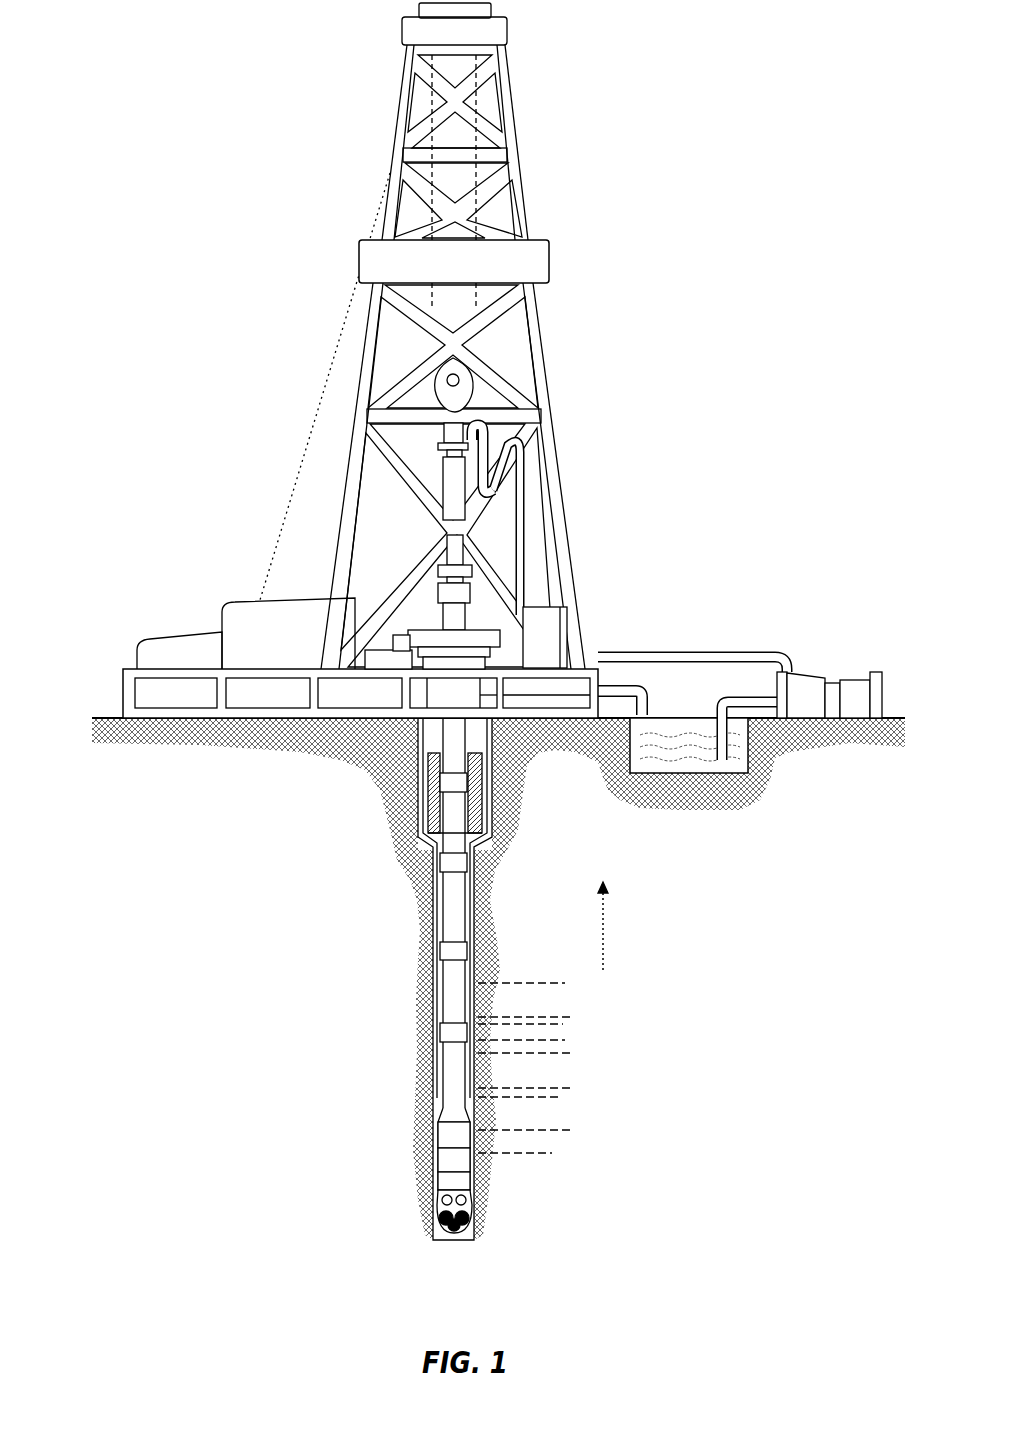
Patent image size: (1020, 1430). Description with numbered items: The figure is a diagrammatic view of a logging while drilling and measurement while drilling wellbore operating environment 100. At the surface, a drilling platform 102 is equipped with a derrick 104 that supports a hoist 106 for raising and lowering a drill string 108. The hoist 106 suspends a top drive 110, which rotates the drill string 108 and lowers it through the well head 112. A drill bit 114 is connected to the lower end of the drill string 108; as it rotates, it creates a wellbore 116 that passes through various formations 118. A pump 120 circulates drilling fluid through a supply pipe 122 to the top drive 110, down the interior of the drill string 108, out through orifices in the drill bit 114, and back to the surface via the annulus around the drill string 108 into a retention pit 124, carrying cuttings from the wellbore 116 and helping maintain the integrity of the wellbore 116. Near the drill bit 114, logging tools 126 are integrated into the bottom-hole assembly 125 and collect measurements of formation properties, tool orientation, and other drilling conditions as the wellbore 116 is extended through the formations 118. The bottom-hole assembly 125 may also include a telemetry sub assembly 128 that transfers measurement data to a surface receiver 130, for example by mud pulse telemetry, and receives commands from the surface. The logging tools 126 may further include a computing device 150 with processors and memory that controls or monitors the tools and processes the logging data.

The wellbore operating environment 100 is at (160, 76).
The drilling platform 102 is at (122, 695).
The derrick 104 is at (522, 170).
The hoist 106 is at (475, 387).
The drill string 108 is at (463, 902).
The top drive 110 is at (452, 478).
The well head 112 is at (497, 627).
The drill bit 114 is at (467, 1193).
The wellbore 116 is at (475, 912).
The formations 118 is at (578, 983).
The pump 120 is at (807, 672).
The supply pipe 122 is at (675, 652).
The retention pit 124 is at (685, 753).
The bottom-hole assembly 125 is at (373, 1150).
The logging tools 126 is at (447, 1157).
The telemetry sub assembly 128 is at (447, 1133).
The surface receiver 130 is at (455, 543).
The computing device 150 is at (453, 1162).